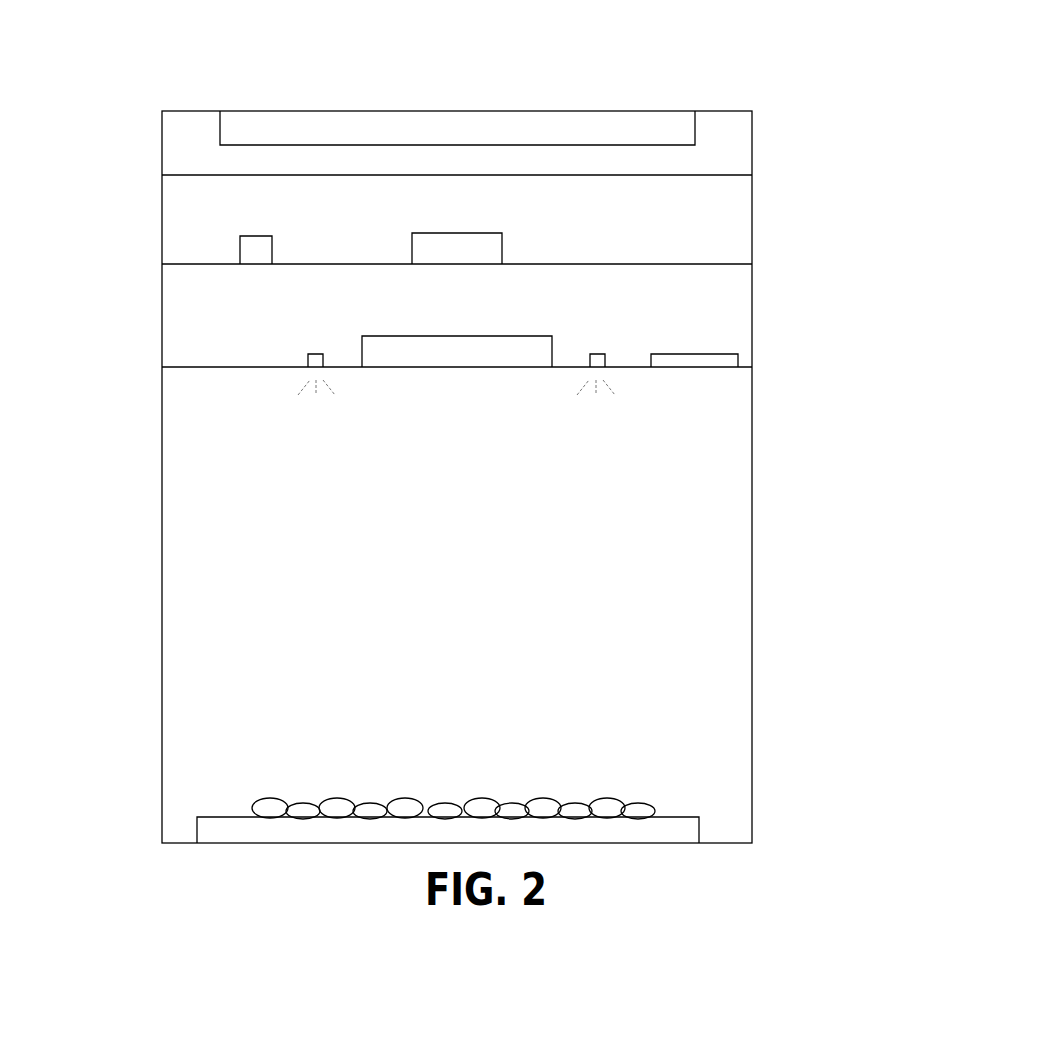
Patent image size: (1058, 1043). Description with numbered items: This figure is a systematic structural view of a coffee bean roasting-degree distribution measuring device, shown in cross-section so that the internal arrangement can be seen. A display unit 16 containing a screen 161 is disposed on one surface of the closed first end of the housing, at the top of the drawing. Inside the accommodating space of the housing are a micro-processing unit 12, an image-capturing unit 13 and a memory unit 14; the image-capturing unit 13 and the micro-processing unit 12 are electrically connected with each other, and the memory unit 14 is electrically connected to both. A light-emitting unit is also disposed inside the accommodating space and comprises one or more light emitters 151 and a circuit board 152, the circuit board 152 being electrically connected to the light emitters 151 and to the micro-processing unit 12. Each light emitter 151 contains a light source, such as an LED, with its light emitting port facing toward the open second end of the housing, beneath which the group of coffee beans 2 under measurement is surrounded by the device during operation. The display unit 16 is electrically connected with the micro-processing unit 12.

The display unit 16 is at (752, 147).
The screen 161 is at (590, 110).
The micro-processing unit 12 is at (457, 233).
The image-capturing unit 13 is at (457, 335).
The memory unit 14 is at (258, 237).
The light emitter 151 is at (313, 355).
The circuit board 152 is at (693, 353).
The coffee beans 2 is at (655, 808).